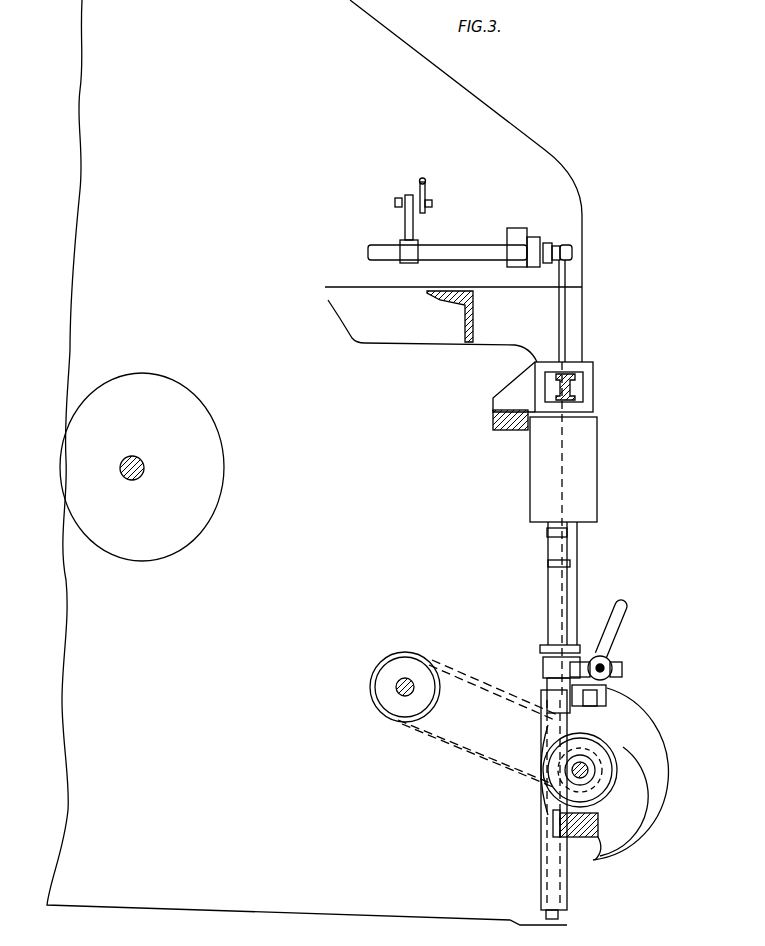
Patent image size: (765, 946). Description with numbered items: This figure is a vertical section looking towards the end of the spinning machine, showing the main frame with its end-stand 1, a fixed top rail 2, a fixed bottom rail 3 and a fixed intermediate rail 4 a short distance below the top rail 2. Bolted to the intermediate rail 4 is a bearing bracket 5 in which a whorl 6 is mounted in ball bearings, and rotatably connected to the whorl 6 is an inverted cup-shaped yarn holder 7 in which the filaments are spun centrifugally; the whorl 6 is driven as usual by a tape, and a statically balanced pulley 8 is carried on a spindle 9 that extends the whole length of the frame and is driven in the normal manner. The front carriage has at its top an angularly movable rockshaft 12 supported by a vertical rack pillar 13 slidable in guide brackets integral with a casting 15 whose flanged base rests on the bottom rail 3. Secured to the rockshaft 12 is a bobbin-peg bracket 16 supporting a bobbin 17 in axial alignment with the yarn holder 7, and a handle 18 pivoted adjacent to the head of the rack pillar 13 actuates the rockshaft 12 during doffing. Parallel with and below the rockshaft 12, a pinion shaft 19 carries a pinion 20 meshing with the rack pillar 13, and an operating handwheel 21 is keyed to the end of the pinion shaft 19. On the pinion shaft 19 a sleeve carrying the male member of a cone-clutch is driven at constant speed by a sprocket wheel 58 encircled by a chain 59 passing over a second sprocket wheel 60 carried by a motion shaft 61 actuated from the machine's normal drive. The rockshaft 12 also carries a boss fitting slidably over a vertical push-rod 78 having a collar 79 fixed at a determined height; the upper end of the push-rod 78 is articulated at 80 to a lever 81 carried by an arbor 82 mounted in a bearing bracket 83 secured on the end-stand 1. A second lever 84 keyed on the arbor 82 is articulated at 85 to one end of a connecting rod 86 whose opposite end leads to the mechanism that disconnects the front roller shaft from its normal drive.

The end-stand 1 is at (568, 222).
The fixed top rail 2 is at (474, 320).
The fixed bottom rail 3 is at (580, 833).
The fixed intermediate rail 4 is at (492, 420).
The bearing bracket 5 is at (530, 380).
The whorl 6 is at (584, 383).
The yarn holder 7 is at (590, 447).
The pulley 8 is at (187, 402).
The spindle 9 is at (145, 468).
The rockshaft 12 is at (614, 669).
The rack pillar 13 is at (541, 740).
The casting 15 is at (598, 815).
The bobbin-peg bracket 16 is at (545, 667).
The bobbin 17 is at (566, 594).
The handle 18 is at (620, 620).
The pinion shaft 19 is at (565, 770).
The pinion 20 is at (603, 782).
The operating handwheel 21 is at (635, 700).
The sprocket wheel 58 is at (610, 771).
The chain 59 is at (460, 760).
The second sprocket wheel 60 is at (435, 703).
The motion shaft 61 is at (396, 688).
The push-rod 78 is at (546, 556).
The collar 79 is at (546, 532).
The articulation 80 is at (575, 254).
The lever 81 is at (548, 268).
The arbor 82 is at (468, 252).
The bearing bracket 83 is at (536, 232).
The second lever 84 is at (404, 222).
The articulation 85 is at (433, 206).
The connecting rod 86 is at (428, 195).